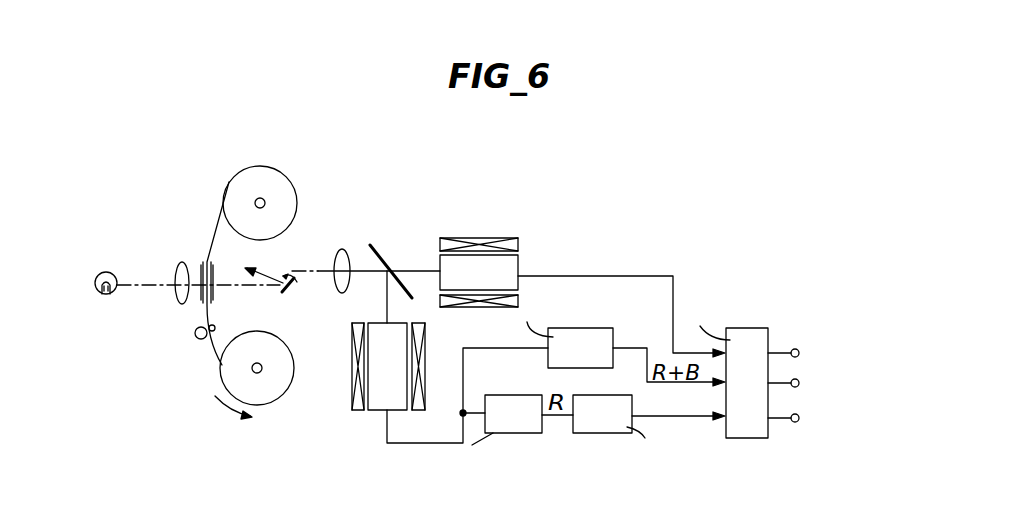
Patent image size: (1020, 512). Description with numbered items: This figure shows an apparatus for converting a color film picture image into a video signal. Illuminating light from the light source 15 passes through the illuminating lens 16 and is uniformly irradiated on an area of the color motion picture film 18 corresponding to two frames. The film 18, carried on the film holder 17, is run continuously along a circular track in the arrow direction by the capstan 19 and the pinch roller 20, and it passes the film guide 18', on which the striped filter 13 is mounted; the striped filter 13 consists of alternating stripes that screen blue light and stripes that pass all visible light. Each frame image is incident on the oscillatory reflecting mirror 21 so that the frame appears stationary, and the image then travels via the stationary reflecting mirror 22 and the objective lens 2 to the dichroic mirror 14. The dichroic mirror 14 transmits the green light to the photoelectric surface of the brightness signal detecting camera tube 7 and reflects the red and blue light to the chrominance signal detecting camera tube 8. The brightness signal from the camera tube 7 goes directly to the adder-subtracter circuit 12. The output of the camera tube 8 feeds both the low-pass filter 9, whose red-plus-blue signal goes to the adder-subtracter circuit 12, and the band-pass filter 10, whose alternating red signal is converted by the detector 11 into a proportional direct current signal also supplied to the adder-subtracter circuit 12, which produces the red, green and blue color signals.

The objective lens 2 is at (341, 292).
The brightness signal detecting camera tube 7 is at (480, 238).
The chrominance signal detecting camera tube 8 is at (353, 410).
The low-pass filter 9 is at (550, 340).
The band-pass filter 10 is at (503, 433).
The detector 11 is at (600, 435).
The adder-subtracter circuit 12 is at (728, 437).
The striped filter 13 is at (205, 262).
The dichroic mirror 14 is at (378, 252).
The light source 15 is at (105, 271).
The illuminating lens 16 is at (182, 262).
The film holder 17 is at (262, 168).
The color motion picture film 18 is at (168, 299).
The film guide 18' is at (234, 294).
The capstan 19 is at (196, 336).
The pinch roller 20 is at (213, 350).
The oscillatory reflecting mirror 21 is at (287, 292).
The stationary reflecting mirror 22 is at (255, 266).